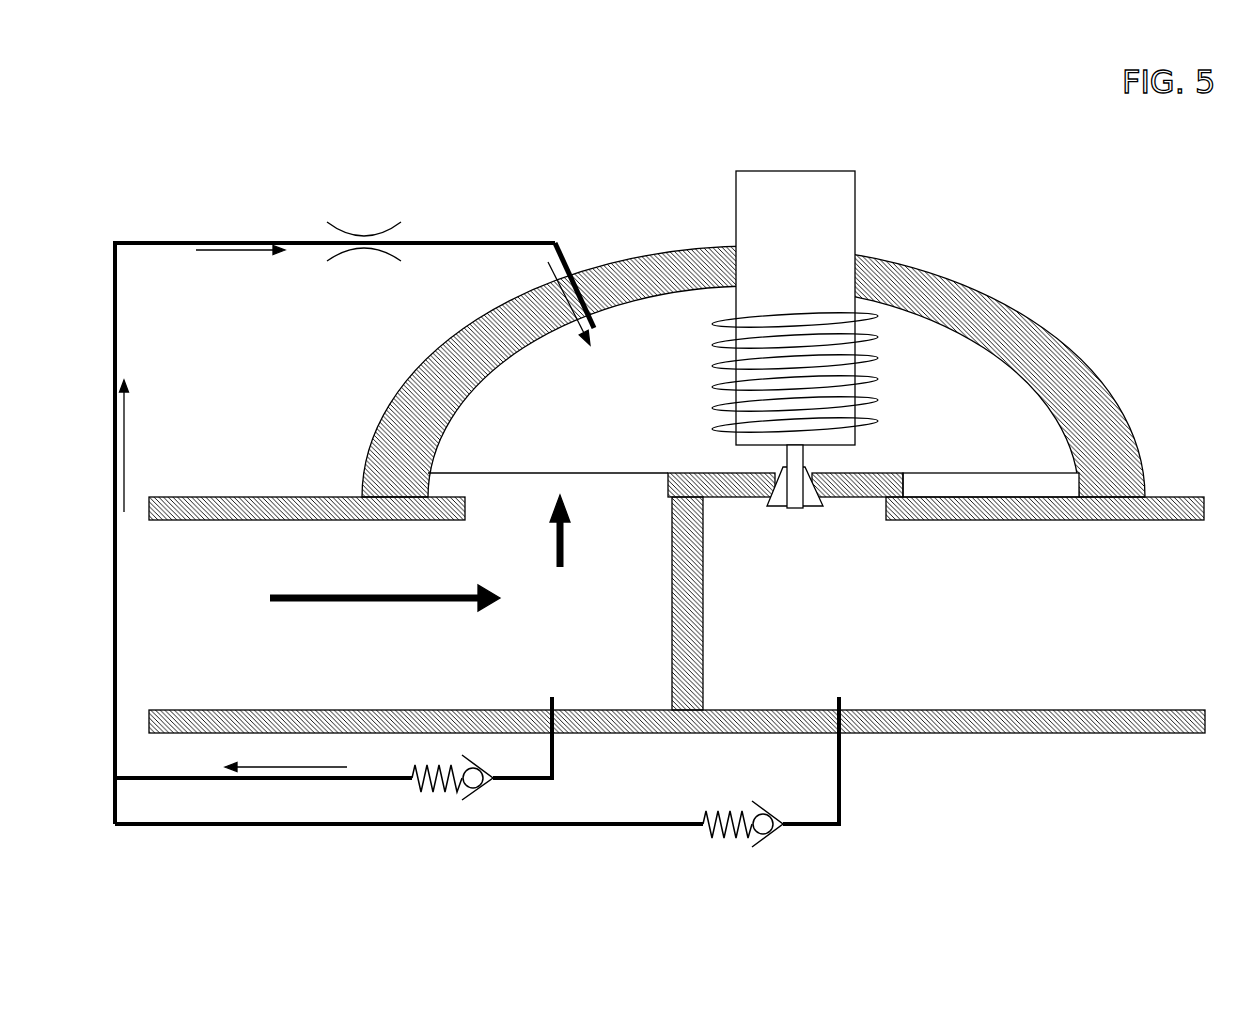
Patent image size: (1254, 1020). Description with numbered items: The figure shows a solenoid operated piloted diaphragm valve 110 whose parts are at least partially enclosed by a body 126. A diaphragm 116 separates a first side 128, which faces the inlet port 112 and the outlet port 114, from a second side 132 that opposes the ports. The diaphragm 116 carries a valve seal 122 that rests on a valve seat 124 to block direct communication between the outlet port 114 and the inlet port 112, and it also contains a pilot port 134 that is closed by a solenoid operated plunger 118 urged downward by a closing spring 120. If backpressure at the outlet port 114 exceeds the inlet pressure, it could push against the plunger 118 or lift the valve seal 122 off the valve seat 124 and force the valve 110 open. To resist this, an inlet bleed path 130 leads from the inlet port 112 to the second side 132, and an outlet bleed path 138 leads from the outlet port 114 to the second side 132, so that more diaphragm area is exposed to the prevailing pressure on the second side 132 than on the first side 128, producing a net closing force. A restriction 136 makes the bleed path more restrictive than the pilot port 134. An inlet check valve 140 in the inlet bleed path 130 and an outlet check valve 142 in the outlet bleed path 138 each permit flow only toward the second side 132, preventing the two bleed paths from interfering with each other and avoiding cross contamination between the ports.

The solenoid operated piloted diaphragm valve 110 is at (266, 82).
The inlet port 112 is at (210, 670).
The outlet port 114 is at (1120, 667).
The diaphragm 116 is at (462, 472).
The solenoid operated plunger 118 is at (842, 197).
The closing spring 120 is at (875, 357).
The valve seal 122 is at (687, 483).
The valve seat 124 is at (725, 522).
The body 126 is at (657, 273).
The first side of the diaphragm 128 is at (624, 547).
The inlet bleed path 130 is at (277, 780).
The second side of the diaphragm 132 is at (1042, 445).
The pilot port 134 is at (799, 492).
The restriction 136 is at (396, 212).
The outlet bleed path 138 is at (842, 772).
The inlet check valve 140 is at (488, 815).
The outlet check valve 142 is at (803, 847).